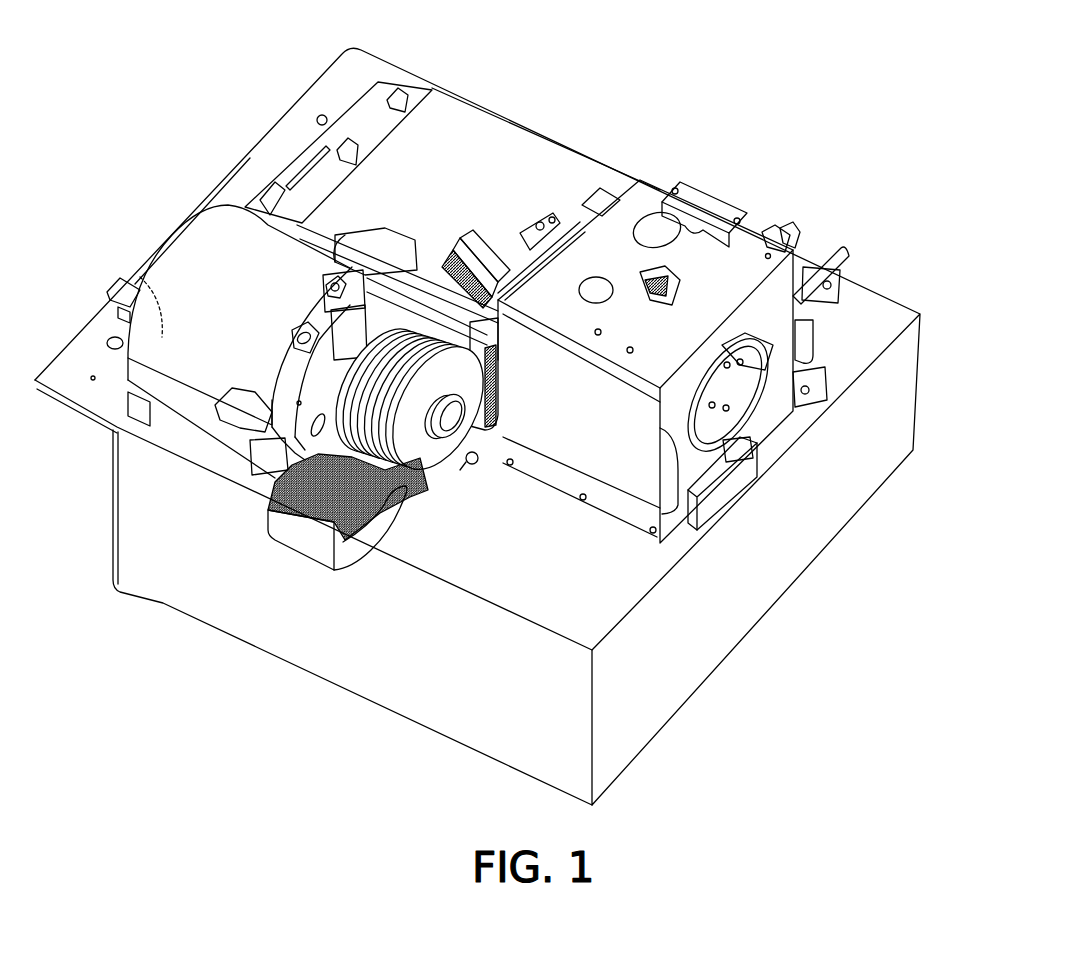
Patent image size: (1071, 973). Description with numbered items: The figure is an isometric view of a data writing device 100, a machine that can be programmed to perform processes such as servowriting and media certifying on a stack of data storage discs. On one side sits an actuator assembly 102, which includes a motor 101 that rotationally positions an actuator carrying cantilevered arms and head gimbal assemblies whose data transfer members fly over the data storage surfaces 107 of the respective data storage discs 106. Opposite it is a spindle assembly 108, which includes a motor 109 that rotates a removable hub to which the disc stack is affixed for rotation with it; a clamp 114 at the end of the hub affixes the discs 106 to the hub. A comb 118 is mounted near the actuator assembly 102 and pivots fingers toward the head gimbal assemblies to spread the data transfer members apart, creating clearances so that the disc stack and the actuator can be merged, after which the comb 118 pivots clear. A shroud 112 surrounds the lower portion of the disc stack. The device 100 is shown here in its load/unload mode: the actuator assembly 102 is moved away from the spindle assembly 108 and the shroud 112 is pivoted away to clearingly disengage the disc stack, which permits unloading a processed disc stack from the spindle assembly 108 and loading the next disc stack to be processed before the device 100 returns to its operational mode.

The data writing device 100 is at (577, 94).
The motor 101 is at (755, 265).
The actuator assembly 102 is at (460, 229).
The data storage disc 106 is at (460, 380).
The data storage surface 107 is at (450, 425).
The spindle assembly 108 is at (150, 248).
The motor 109 is at (140, 268).
The shroud 112 is at (360, 550).
The clamp 114 is at (471, 465).
The comb 118 is at (480, 245).